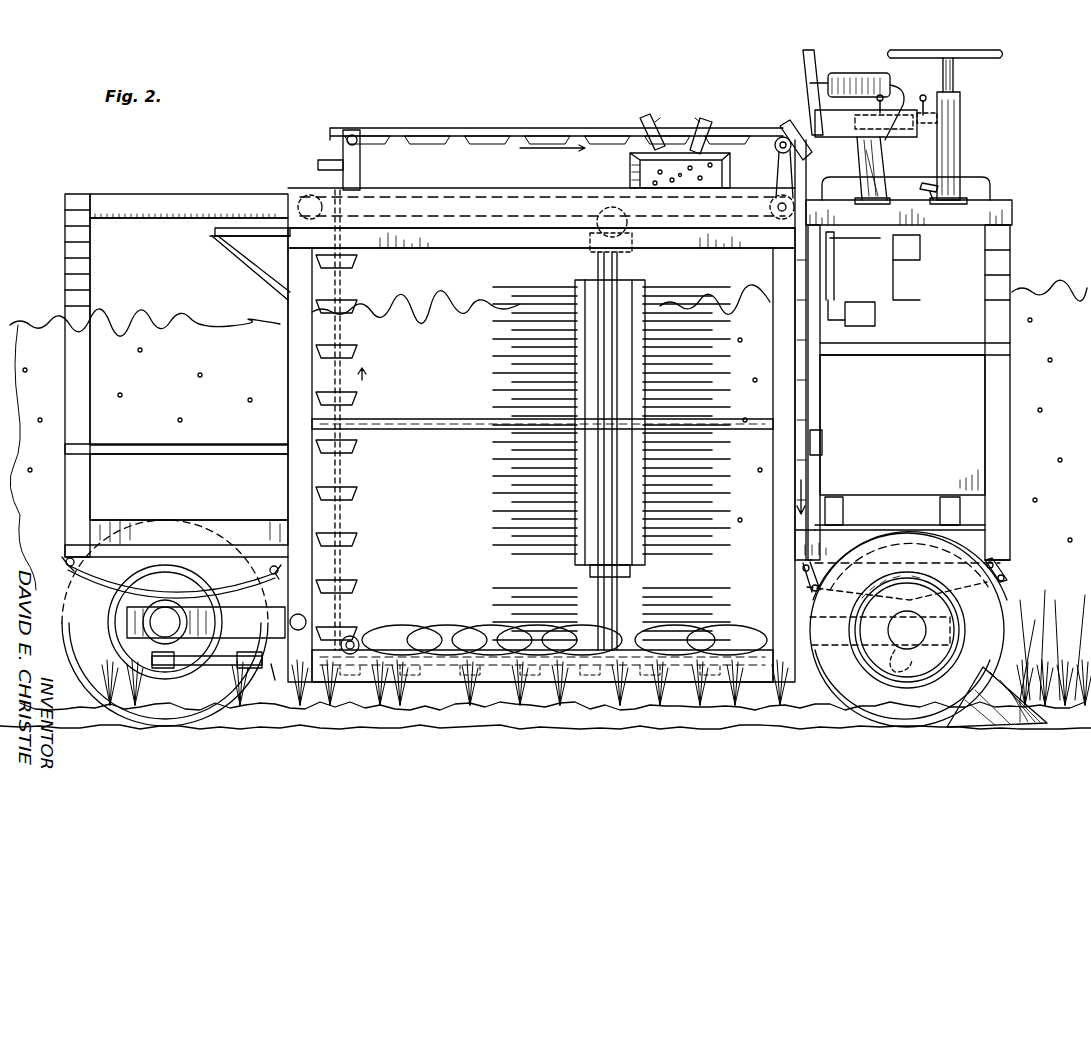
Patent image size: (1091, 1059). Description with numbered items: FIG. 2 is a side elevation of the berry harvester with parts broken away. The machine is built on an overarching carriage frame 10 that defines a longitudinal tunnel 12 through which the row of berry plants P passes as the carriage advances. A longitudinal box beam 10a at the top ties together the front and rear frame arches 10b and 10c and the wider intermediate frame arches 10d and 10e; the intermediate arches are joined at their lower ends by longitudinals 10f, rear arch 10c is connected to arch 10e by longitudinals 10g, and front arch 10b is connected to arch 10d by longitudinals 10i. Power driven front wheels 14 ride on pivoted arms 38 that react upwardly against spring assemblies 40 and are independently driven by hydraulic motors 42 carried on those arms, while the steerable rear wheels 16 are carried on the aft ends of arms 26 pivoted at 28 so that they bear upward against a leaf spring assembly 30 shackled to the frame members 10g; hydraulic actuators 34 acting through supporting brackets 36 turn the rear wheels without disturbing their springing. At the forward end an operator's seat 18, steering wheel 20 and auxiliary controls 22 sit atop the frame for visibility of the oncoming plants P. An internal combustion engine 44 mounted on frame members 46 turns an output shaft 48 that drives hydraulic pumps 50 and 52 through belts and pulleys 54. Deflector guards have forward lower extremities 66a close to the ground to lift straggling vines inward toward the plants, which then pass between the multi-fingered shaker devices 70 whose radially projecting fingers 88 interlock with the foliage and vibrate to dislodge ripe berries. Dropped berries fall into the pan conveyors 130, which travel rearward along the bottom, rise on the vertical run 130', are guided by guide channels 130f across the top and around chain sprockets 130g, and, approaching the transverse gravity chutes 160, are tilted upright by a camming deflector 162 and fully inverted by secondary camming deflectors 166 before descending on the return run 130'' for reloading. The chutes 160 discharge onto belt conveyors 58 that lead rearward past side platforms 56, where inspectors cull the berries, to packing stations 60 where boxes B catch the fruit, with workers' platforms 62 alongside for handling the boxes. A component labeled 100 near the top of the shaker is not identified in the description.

The carriage frame 10 is at (1019, 229).
The longitudinal box beam 10a is at (200, 195).
The front frame arch 10b is at (1010, 268).
The rear frame arch 10c is at (68, 262).
The intermediate frame arch 10d is at (814, 400).
The intermediate frame arch 10e is at (290, 358).
The longitudinals 10f is at (758, 690).
The longitudinals 10g is at (128, 520).
The longitudinals 10i is at (856, 542).
The longitudinally extending space 12 is at (541, 455).
The front wheels 14 is at (909, 706).
The rear wheels 16 is at (164, 706).
The operator's seat 18 is at (806, 102).
The steering wheel 20 is at (973, 56).
The auxiliary controls 22 is at (928, 173).
The arms 26 is at (206, 622).
The pivots 28 is at (298, 612).
The leaf spring assembly 30 is at (238, 589).
The hydraulic actuators 34 is at (206, 668).
The supporting brackets 36 is at (278, 682).
The pivoted arms 38 is at (843, 640).
The spring assemblies 40 is at (962, 622).
The hydraulic motors 42 is at (940, 640).
The internal combustion engine 44 is at (902, 425).
The frame members 46 is at (924, 504).
The output shaft 48 is at (820, 438).
The hydraulic pump 50 is at (854, 302).
The hydraulic pump 52 is at (920, 256).
The belts and pulleys 54 is at (843, 263).
The side platforms 56 is at (438, 420).
The belt conveyors 58 is at (434, 194).
The packing stations 60 is at (210, 240).
The workers' platforms 62 is at (138, 444).
The forward lower extremities 66a is at (1026, 720).
The shaker devices 70 is at (653, 276).
The shaker fingers 88 is at (542, 300).
The shaft bearing 100 is at (630, 228).
The conveyors 130 is at (554, 687).
The vertical run 130' is at (359, 420).
The return run 130'' is at (834, 350).
The guide channels 130f is at (446, 130).
The chain sprockets 130g is at (365, 146).
The gravity chutes 160 is at (630, 172).
The camming deflector 162 is at (676, 124).
The secondary camming deflectors 166 is at (720, 148).
The boxes B is at (214, 234).
The plants P is at (202, 322).